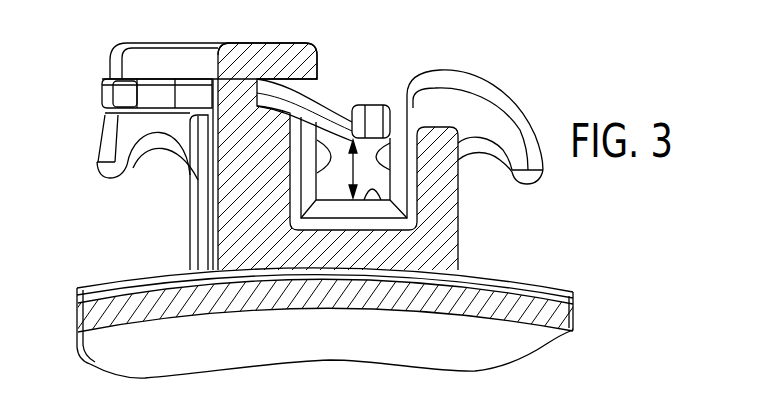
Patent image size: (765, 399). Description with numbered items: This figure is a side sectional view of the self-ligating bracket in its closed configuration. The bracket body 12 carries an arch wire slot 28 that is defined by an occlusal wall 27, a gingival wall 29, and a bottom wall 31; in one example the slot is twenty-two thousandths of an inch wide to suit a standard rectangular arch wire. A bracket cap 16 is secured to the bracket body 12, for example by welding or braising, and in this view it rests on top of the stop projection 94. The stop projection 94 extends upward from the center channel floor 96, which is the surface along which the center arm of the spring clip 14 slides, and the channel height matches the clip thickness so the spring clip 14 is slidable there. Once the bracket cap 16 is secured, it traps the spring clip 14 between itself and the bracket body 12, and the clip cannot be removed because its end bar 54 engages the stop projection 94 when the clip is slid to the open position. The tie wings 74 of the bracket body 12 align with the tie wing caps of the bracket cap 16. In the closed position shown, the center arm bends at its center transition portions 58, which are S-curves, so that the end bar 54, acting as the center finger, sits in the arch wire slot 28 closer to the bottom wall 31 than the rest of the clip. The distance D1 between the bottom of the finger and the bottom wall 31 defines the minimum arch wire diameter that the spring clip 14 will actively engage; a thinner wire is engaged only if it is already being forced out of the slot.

The bracket body 12 is at (437, 228).
The spring clip 14 is at (102, 97).
The bracket cap 16 is at (257, 67).
The occlusal wall 27 is at (333, 186).
The arch wire slot 28 is at (338, 168).
The gingival wall 29 is at (392, 172).
The bottom wall 31 is at (383, 200).
The end bar 54 is at (370, 105).
The center transition portions 58 is at (322, 105).
The tie wings 74 is at (123, 132).
The stop projection 94 is at (233, 107).
The center channel floor 96 is at (190, 190).
The distance D1 is at (350, 172).